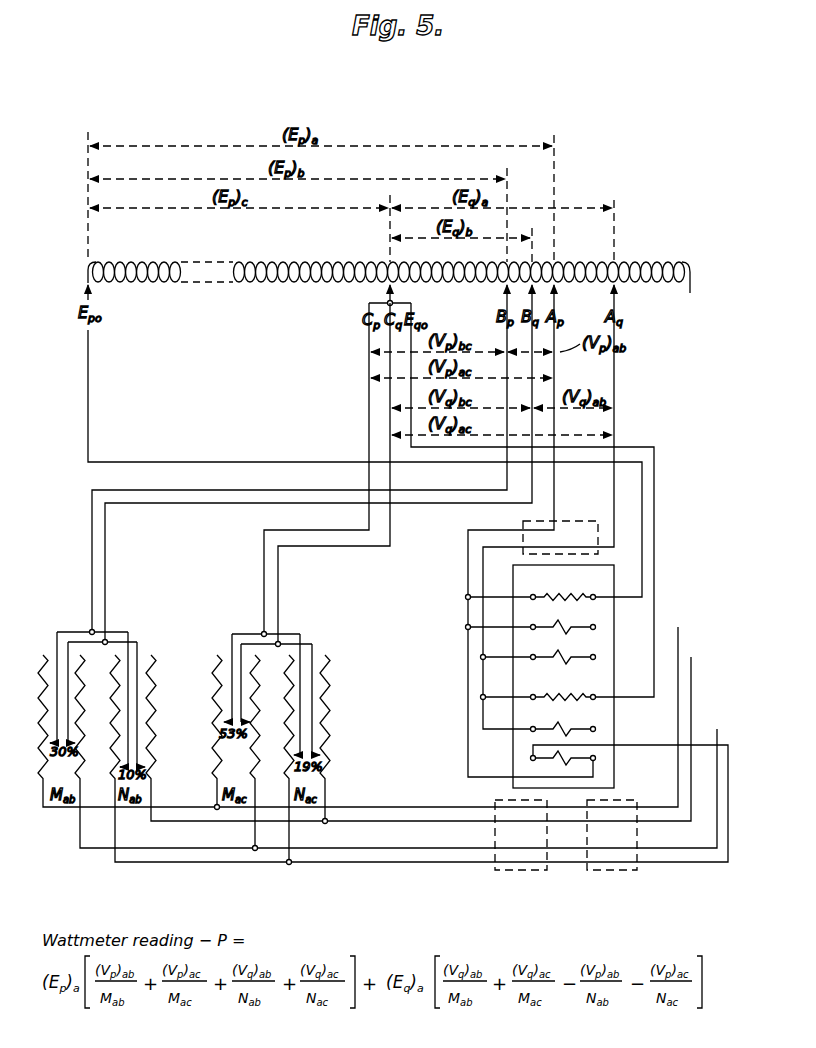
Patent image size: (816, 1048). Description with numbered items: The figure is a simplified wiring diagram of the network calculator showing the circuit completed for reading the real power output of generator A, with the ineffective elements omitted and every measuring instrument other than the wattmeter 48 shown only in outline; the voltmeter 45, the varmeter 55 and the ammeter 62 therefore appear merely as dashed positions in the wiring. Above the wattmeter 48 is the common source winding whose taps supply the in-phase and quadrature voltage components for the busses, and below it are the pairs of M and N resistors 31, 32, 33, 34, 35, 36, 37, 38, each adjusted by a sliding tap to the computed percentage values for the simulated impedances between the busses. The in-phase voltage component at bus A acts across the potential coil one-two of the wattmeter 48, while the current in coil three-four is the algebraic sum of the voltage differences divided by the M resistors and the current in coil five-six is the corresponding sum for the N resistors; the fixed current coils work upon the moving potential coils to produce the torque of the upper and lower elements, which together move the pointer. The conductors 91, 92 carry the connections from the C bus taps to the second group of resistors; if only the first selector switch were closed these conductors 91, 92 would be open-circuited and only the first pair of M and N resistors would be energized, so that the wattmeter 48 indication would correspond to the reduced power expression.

The M resistor 31 is at (42, 678).
The M resistor 32 is at (82, 652).
The N resistor 33 is at (114, 652).
The N resistor 34 is at (152, 660).
The M resistor 35 is at (216, 660).
The M resistor 36 is at (256, 655).
The N resistor 37 is at (288, 655).
The N resistor 38 is at (328, 660).
The voltmeter 45 is at (598, 527).
The wattmeter 48 is at (614, 578).
The varmeter 55 is at (623, 871).
The ammeter 62 is at (533, 871).
The conductor 91 is at (278, 605).
The conductor 92 is at (264, 604).